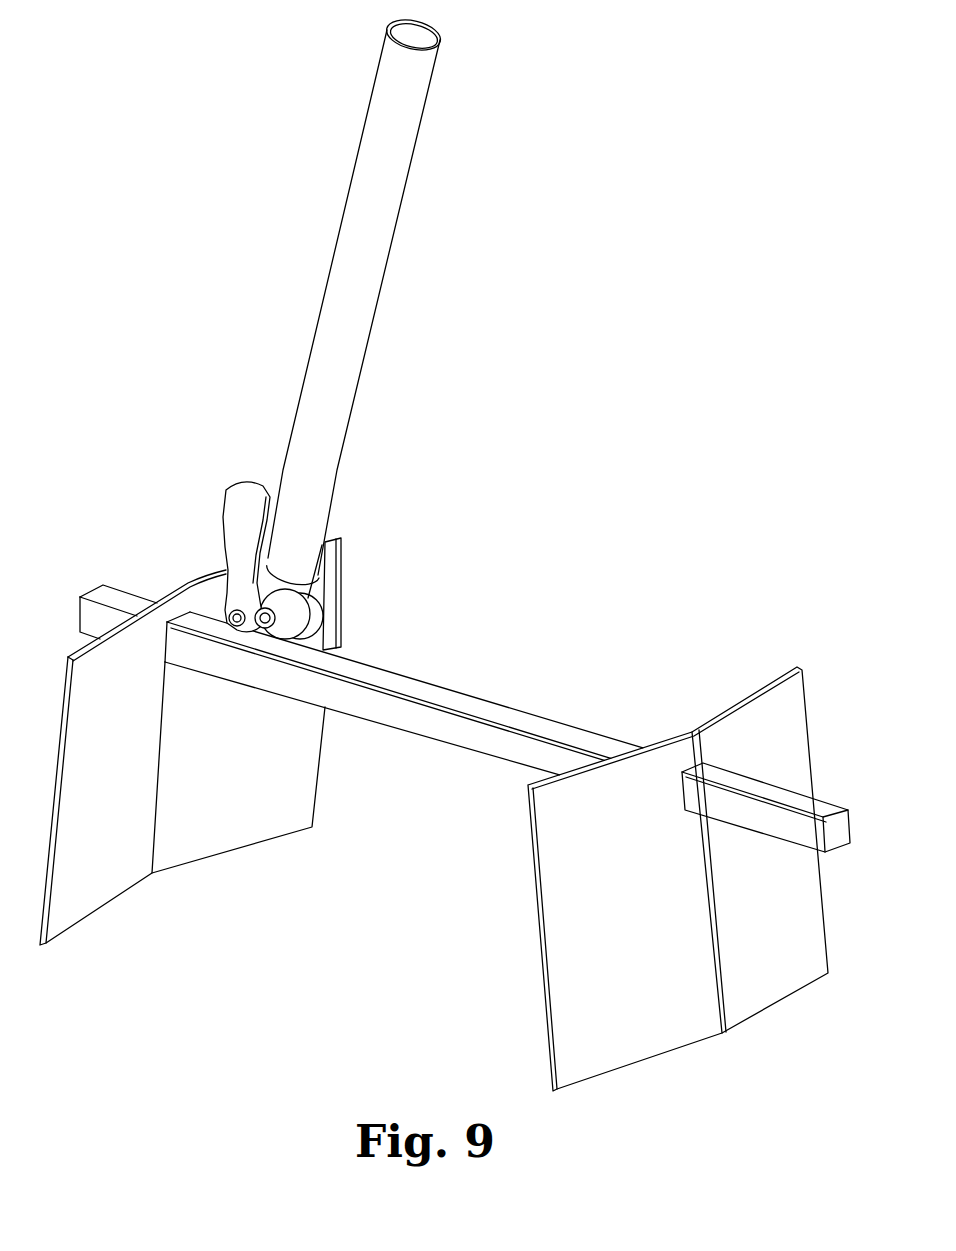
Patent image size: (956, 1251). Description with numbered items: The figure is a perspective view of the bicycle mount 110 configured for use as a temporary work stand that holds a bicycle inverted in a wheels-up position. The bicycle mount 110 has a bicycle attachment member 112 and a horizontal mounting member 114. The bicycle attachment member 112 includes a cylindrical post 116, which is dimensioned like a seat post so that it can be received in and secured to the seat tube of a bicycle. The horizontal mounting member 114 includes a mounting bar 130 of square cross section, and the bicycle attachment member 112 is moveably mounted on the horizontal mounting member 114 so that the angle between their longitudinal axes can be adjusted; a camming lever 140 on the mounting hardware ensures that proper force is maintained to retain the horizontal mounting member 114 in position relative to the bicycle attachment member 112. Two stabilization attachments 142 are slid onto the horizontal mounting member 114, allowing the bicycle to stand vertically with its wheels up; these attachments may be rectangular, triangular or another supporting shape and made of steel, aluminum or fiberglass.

The bicycle mount 110 is at (445, 579).
The bicycle attachment member 112 is at (346, 300).
The horizontal mounting member 114 is at (445, 803).
The cylindrical post 116 is at (368, 308).
The mounting bar 130 is at (402, 680).
The camming lever 140 is at (233, 510).
The stabilization attachment 142 is at (225, 832).